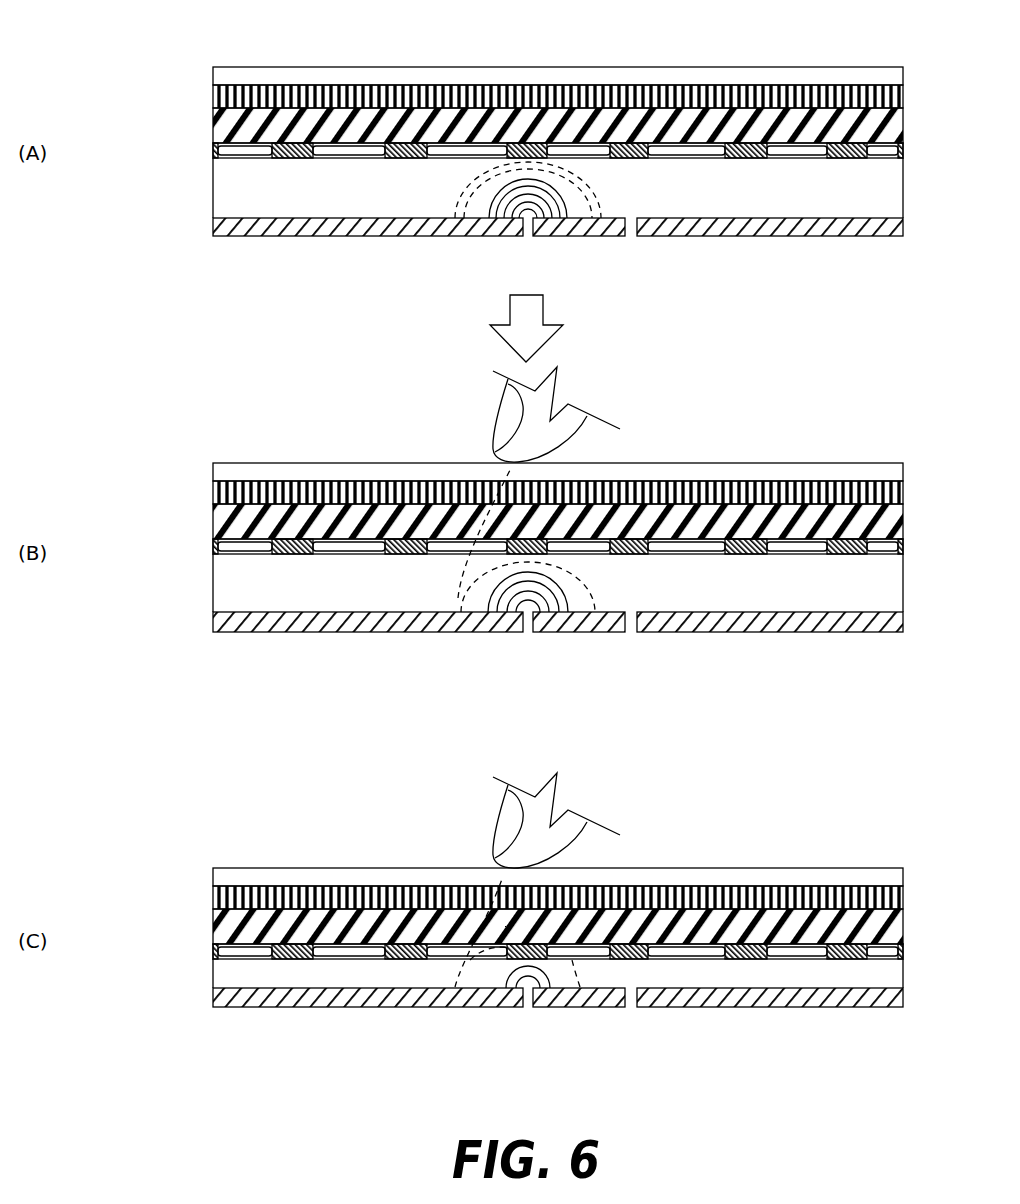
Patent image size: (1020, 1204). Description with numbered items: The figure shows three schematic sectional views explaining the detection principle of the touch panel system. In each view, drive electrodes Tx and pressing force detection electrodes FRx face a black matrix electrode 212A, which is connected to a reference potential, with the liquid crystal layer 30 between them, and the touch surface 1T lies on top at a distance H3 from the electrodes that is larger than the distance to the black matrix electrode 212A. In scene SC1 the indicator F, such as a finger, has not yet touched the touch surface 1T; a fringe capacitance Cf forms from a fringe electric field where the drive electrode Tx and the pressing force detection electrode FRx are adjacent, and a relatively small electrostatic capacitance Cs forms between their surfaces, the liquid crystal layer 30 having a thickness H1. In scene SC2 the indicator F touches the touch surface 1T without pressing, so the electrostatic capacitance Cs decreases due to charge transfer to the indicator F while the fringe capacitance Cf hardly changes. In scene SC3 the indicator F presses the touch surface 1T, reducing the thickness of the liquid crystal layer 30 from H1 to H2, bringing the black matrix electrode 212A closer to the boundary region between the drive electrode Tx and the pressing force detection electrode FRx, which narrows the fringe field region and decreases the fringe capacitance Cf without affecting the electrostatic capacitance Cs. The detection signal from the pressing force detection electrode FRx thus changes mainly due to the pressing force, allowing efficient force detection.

The touch surface 1T is at (366, 62).
The black matrix electrode 212A is at (528, 146).
The liquid crystal layer 30 is at (877, 186).
The electrostatic capacitance Cs is at (515, 575).
The fringe capacitance Cf is at (533, 275).
The drive electrode Tx is at (327, 237).
The pressing force detection electrode FRx is at (585, 237).
The indicator F is at (495, 409).
The thickness of the liquid crystal layer H1 is at (167, 158).
The decreased thickness of the liquid crystal layer H2 is at (160, 959).
The distance to the touch surface H3 is at (127, 85).
The scene SC1 is at (238, 258).
The scene SC2 is at (238, 663).
The scene SC3 is at (238, 1053).